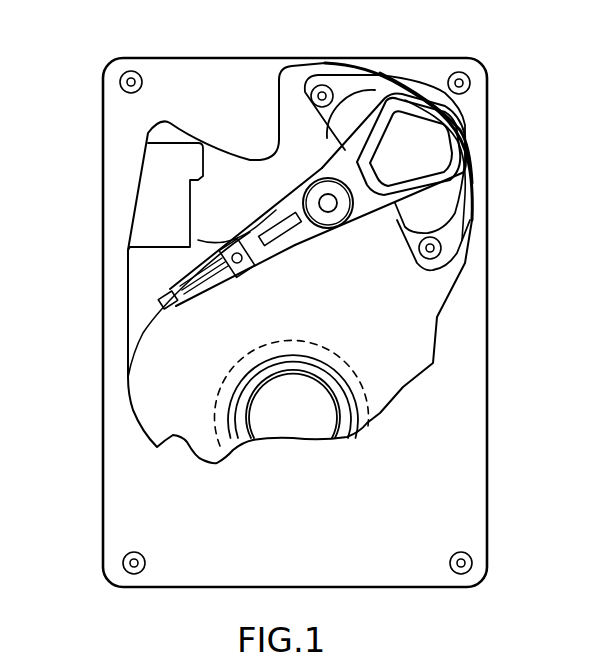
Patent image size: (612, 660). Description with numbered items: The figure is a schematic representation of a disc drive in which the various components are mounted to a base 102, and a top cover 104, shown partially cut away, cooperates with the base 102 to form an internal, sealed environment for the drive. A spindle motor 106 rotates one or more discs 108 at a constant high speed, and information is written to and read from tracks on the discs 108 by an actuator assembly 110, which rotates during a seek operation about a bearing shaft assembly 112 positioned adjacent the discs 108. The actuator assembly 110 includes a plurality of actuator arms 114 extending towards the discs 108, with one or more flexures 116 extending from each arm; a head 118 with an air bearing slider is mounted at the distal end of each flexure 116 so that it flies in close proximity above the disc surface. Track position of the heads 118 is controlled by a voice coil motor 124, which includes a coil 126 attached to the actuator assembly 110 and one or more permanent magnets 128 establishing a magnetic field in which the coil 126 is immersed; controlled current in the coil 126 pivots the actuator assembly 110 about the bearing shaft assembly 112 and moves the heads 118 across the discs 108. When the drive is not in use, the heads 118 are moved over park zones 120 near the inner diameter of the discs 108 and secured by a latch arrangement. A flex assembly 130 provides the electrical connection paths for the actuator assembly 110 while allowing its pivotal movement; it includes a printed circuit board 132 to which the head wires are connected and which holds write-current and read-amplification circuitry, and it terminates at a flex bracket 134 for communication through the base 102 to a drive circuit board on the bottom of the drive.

The base 102 is at (152, 292).
The top cover 104 is at (137, 482).
The spindle motor 106 is at (293, 423).
The disc 108 is at (403, 362).
The actuator assembly 110 is at (315, 230).
The bearing shaft assembly 112 is at (330, 204).
The actuator arm 114 is at (293, 248).
The flexure 116 is at (200, 283).
The head 118 is at (162, 310).
The park zone 120 is at (217, 413).
The voice coil motor 124 is at (367, 105).
The coil 126 is at (452, 147).
The permanent magnet 128 is at (346, 112).
The flex assembly 130 is at (276, 208).
The printed circuit board 132 is at (283, 168).
The flex bracket 134 is at (158, 203).